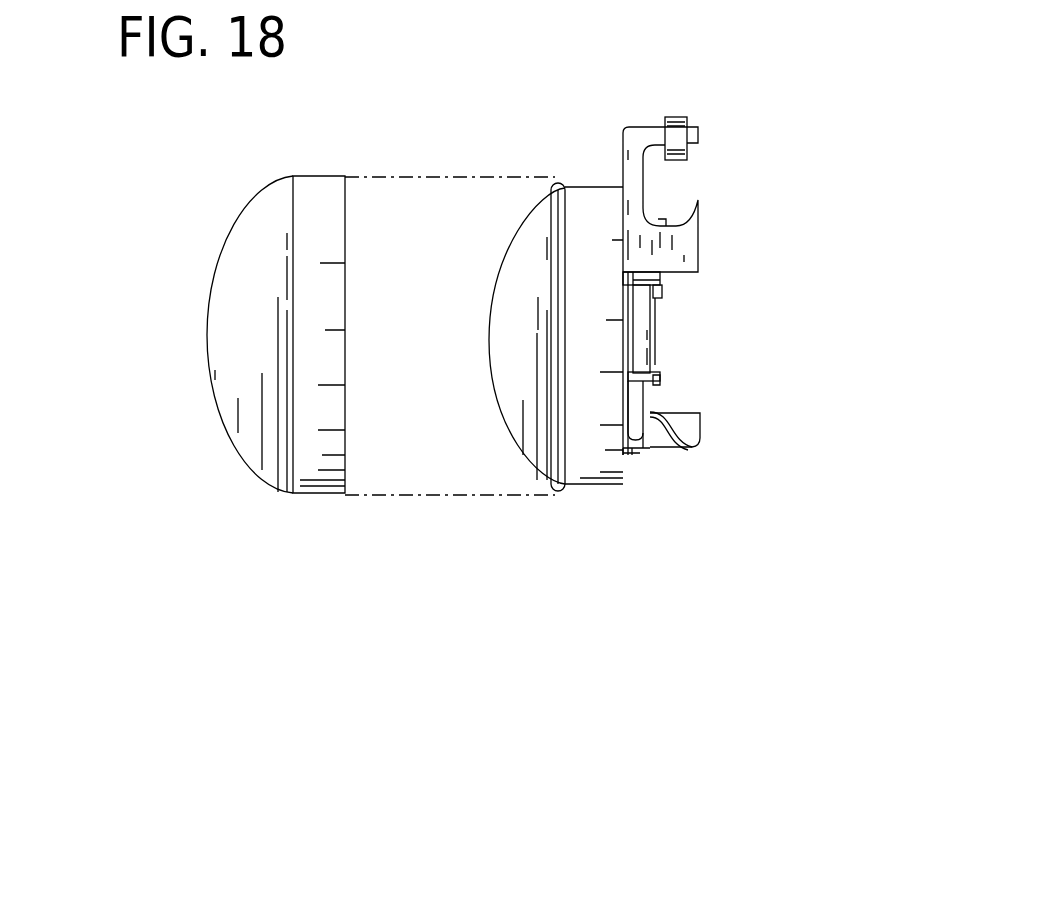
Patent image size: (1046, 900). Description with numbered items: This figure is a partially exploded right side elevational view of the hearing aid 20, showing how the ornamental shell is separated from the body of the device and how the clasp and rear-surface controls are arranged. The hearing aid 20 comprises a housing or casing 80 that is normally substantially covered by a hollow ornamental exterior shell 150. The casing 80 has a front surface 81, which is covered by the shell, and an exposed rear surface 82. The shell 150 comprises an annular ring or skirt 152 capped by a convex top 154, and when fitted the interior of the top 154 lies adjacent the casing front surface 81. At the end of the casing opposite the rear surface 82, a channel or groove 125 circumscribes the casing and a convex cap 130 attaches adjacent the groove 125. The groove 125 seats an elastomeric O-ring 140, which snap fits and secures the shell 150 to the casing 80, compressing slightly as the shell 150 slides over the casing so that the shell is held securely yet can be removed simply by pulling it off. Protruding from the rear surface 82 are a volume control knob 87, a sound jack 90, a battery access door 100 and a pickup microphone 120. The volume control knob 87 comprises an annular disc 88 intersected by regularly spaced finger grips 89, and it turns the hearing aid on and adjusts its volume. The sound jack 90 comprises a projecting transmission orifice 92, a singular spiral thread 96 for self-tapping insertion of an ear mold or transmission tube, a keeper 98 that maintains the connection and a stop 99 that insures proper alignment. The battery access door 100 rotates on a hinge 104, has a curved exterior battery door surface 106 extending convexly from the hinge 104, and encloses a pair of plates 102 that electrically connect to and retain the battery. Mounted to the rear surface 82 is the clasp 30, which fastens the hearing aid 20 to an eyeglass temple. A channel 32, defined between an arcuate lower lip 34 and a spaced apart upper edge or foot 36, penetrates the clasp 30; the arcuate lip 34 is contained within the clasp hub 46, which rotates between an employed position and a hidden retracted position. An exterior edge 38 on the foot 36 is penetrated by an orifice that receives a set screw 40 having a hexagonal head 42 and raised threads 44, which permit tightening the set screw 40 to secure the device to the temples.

The hearing aid 20 is at (165, 152).
The clasp 30 is at (728, 241).
The channel 32 is at (656, 188).
The arcuate lower lip 34 is at (680, 213).
The foot 36 is at (688, 161).
The exterior edge 38 is at (640, 126).
The set screw 40 is at (702, 96).
The hexagonal head 42 is at (668, 117).
The raised threads 44 is at (689, 124).
The clasp hub 46 is at (678, 247).
The casing 80 is at (594, 514).
The front surface 81 is at (520, 307).
The rear surface 82 is at (622, 480).
The volume control knob 87 is at (686, 292).
The annular disc 88 is at (645, 276).
The finger grips 89 is at (667, 299).
The sound jack 90 is at (676, 458).
The transmission orifice 92 is at (700, 427).
The spiral thread 96 is at (688, 448).
The keeper 98 is at (645, 450).
The stop 99 is at (628, 455).
The battery access door 100 is at (672, 360).
The plates 102 is at (660, 384).
The hinge 104 is at (627, 280).
The exterior battery door surface 106 is at (655, 336).
The pickup microphone 120 is at (626, 434).
The groove 125 is at (488, 236).
The convex cap 130 is at (488, 342).
The O-ring 140 is at (555, 166).
The ornamental exterior shell 150 is at (176, 335).
The skirt 152 is at (332, 482).
The convex top 154 is at (240, 410).